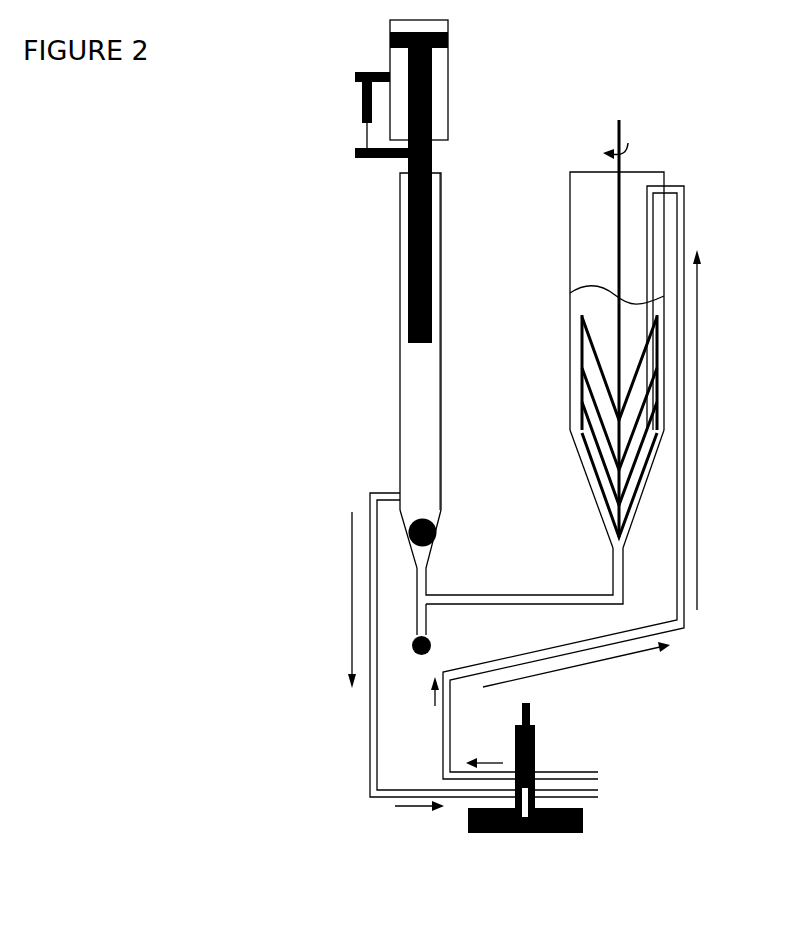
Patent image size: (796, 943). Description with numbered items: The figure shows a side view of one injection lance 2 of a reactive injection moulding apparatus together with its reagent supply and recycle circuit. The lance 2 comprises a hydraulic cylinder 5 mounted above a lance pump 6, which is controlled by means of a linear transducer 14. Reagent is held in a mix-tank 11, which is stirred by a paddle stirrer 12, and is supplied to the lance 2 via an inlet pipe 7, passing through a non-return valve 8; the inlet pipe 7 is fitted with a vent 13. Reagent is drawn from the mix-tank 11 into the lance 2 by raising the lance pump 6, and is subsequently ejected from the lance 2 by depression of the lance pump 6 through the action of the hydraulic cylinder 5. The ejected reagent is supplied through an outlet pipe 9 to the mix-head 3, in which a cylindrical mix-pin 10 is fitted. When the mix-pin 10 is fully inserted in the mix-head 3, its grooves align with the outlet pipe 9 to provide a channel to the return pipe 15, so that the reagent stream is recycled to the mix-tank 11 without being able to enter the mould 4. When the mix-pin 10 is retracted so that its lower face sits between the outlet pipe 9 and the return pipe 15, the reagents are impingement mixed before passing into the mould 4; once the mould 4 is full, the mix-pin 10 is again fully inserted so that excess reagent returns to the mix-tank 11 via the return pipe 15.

The injection lance 2 is at (442, 390).
The mix-head 3 is at (535, 760).
The mould 4 is at (575, 833).
The hydraulic cylinder 5 is at (450, 75).
The lance pump 6 is at (431, 252).
The inlet pipe 7 is at (427, 580).
The non-return valve 8 is at (435, 527).
The outlet pipe 9 is at (367, 708).
The mix-pin 10 is at (530, 715).
The mix-tank 11 is at (648, 170).
The paddle stirrer 12 is at (623, 123).
The vent 13 is at (428, 640).
The linear transducer 14 is at (360, 97).
The return pipe 15 is at (683, 237).